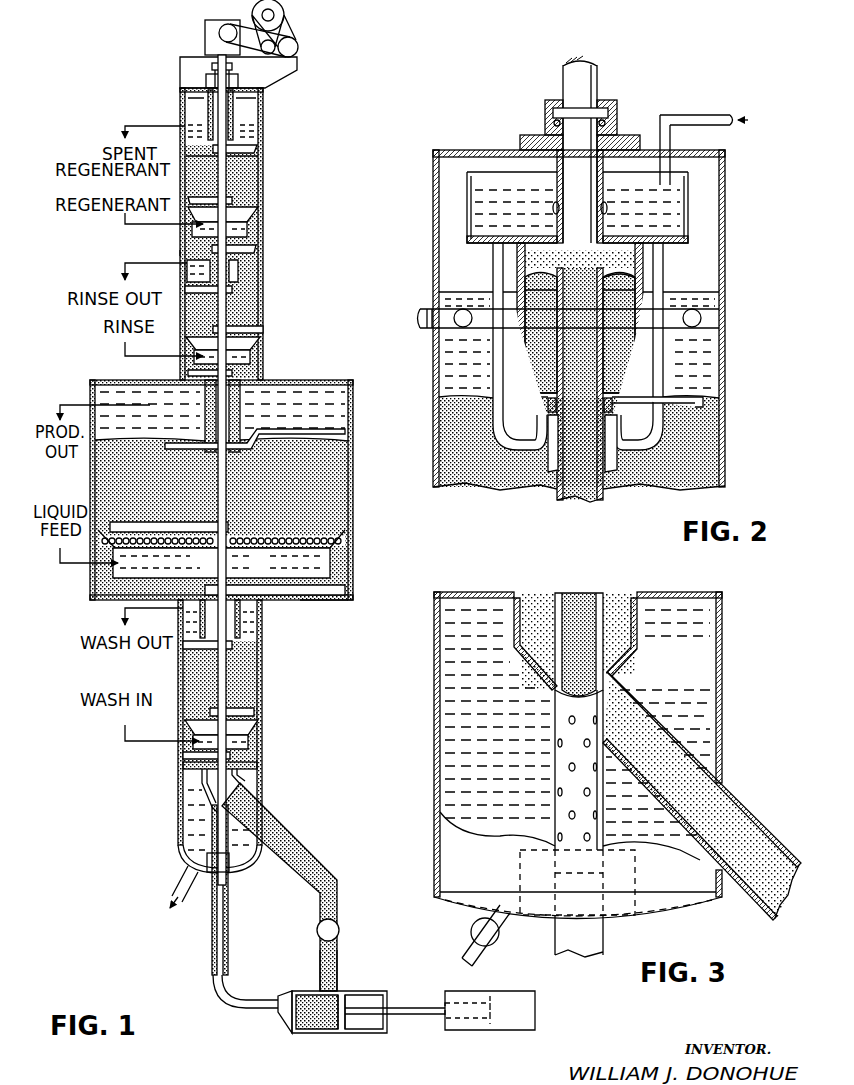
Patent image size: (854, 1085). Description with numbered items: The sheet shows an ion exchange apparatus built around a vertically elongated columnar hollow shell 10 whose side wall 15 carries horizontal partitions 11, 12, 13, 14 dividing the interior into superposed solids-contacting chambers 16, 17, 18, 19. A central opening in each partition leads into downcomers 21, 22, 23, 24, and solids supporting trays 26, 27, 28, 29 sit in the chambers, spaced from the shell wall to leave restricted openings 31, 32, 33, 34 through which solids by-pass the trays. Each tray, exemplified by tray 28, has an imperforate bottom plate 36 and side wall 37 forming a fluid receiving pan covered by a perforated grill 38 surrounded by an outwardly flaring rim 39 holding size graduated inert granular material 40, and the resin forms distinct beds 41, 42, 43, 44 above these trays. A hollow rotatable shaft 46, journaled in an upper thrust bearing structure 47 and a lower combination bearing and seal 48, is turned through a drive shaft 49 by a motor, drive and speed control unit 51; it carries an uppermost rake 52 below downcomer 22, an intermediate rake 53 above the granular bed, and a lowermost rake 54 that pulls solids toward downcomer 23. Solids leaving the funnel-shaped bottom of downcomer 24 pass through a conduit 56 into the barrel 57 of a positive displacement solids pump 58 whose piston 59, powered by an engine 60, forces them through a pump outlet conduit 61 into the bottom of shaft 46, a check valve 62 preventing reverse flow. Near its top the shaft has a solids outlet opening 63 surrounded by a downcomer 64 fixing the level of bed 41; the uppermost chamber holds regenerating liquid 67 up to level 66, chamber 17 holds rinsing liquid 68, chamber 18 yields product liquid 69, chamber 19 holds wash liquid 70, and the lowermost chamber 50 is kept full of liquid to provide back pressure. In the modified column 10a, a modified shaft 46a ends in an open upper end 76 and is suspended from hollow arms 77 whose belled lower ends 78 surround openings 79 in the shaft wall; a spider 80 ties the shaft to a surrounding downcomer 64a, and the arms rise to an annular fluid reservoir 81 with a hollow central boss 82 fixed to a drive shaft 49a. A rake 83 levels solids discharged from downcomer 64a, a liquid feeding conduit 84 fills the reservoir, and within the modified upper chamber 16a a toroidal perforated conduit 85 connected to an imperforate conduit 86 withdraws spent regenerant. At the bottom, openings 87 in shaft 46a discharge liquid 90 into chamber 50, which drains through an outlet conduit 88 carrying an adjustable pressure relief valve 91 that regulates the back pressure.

In FIG. 1, the columnar hollow shell 10 is at (268, 373).
In FIG. 2, the modified column 10a is at (730, 367).
In FIG. 3, the modified column 10a is at (732, 698).
In FIG. 1, the horizontal partition 11 is at (258, 252).
In FIG. 1, the horizontal partition 12 is at (264, 384).
In FIG. 1, the horizontal partition 13 is at (246, 613).
In FIG. 1, the horizontal partition 14 is at (259, 776).
In FIG. 3, the horizontal partition 14 is at (678, 594).
In FIG. 1, the side wall 15 is at (180, 254).
In FIG. 1, the uppermost solids-contacting chamber 16 is at (197, 103).
In FIG. 2, the modified upper chamber 16a is at (692, 202).
In FIG. 1, the solids-contacting chamber 17 is at (252, 277).
In FIG. 1, the largest solids-contacting chamber 18 is at (330, 421).
In FIG. 1, the lowermost solids-contacting chamber 19 is at (262, 622).
In FIG. 1, the downcomer conduit 21 is at (235, 291).
In FIG. 1, the downcomer 22 is at (242, 413).
In FIG. 1, the downcomer 23 is at (234, 646).
In FIG. 1, the lowermost downcomer 24 is at (200, 775).
In FIG. 1, the solids supporting tray 26 is at (250, 224).
In FIG. 1, the solids supporting tray 27 is at (258, 357).
In FIG. 1, the solids supporting tray 28 is at (334, 576).
In FIG. 1, the solids supporting tray 29 is at (260, 740).
In FIG. 1, the restricted opening 31 is at (245, 201).
In FIG. 1, the restricted opening 32 is at (265, 330).
In FIG. 1, the peripheral aperture 33 is at (346, 531).
In FIG. 1, the restricted opening 34 is at (256, 714).
In FIG. 1, the imperforate bottom plate 36 is at (265, 573).
In FIG. 1, the tray side wall 37 is at (320, 558).
In FIG. 1, the perforated grill 38 is at (180, 556).
In FIG. 1, the outwardly flaring imperforate rim 39 is at (340, 550).
In FIG. 1, the inert granular material 40 is at (303, 535).
In FIG. 1, the bed of solids 41 is at (264, 160).
In FIG. 2, the bed of solids 41 is at (722, 462).
In FIG. 1, the bed of solids 42 is at (264, 312).
In FIG. 1, the bed of solids 43 is at (348, 468).
In FIG. 1, the bed of solids 44 is at (263, 672).
In FIG. 1, the central rotatable shaft 46 is at (190, 115).
In FIG. 2, the modified rotatable shaft 46a is at (556, 498).
In FIG. 3, the modified rotatable shaft 46a is at (555, 600).
In FIG. 1, the upper thrust bearing structure 47 is at (205, 80).
In FIG. 1, the combination bearing and seal 48 is at (236, 870).
In FIG. 3, the combination bearing and seal 48 is at (632, 871).
In FIG. 1, the drive shaft 49 is at (233, 66).
In FIG. 2, the drive shaft 49a is at (599, 82).
In FIG. 1, the lowermost chamber 50 is at (182, 844).
In FIG. 3, the lowermost chamber 50 is at (700, 652).
In FIG. 1, the motor, drive and speed control unit 51 is at (299, 31).
In FIG. 1, the uppermost rake 52 is at (347, 436).
In FIG. 1, the intermediate rake 53 is at (186, 521).
In FIG. 1, the lowermost rake 54 is at (333, 601).
In FIG. 1, the conduit 56 is at (292, 848).
In FIG. 1, the pump barrel 57 is at (302, 991).
In FIG. 1, the solids pump 58 is at (343, 972).
In FIG. 1, the piston 59 is at (348, 1004).
In FIG. 1, the engine 60 is at (478, 1030).
In FIG. 1, the pump outlet conduit 61 is at (210, 967).
In FIG. 1, the check valve 62 is at (340, 928).
In FIG. 1, the solids outlet opening 63 is at (236, 101).
In FIG. 1, the downcomer 64 is at (256, 113).
In FIG. 2, the surrounding downcomer 64a is at (640, 292).
In FIG. 1, the liquid level 66 is at (258, 120).
In FIG. 2, the liquid level 66 is at (440, 296).
In FIG. 1, the resin regenerating liquid 67 is at (258, 145).
In FIG. 1, the rinsing liquid 68 is at (242, 271).
In FIG. 1, the product liquid 69 is at (305, 401).
In FIG. 1, the wash liquid 70 is at (183, 621).
In FIG. 2, the open upper end 76 is at (625, 272).
In FIG. 2, the supporting arms 77 is at (500, 432).
In FIG. 2, the belled lower ends 78 is at (614, 462).
In FIG. 2, the shaft wall openings 79 is at (548, 452).
In FIG. 2, the spider 80 is at (532, 270).
In FIG. 2, the annular fluid reservoir 81 is at (645, 250).
In FIG. 2, the hollow central boss 82 is at (561, 176).
In FIG. 2, the rake 83 is at (705, 398).
In FIG. 2, the liquid feeding conduit 84 is at (700, 117).
In FIG. 2, the toroidal perforated conduit 85 is at (702, 318).
In FIG. 2, the imperforate conduit 86 is at (422, 330).
In FIG. 3, the shaft openings 87 is at (560, 792).
In FIG. 3, the outlet conduit 88 is at (490, 950).
In FIG. 3, the liquid 90 is at (448, 690).
In FIG. 3, the adjustable pressure relief valve 91 is at (470, 933).